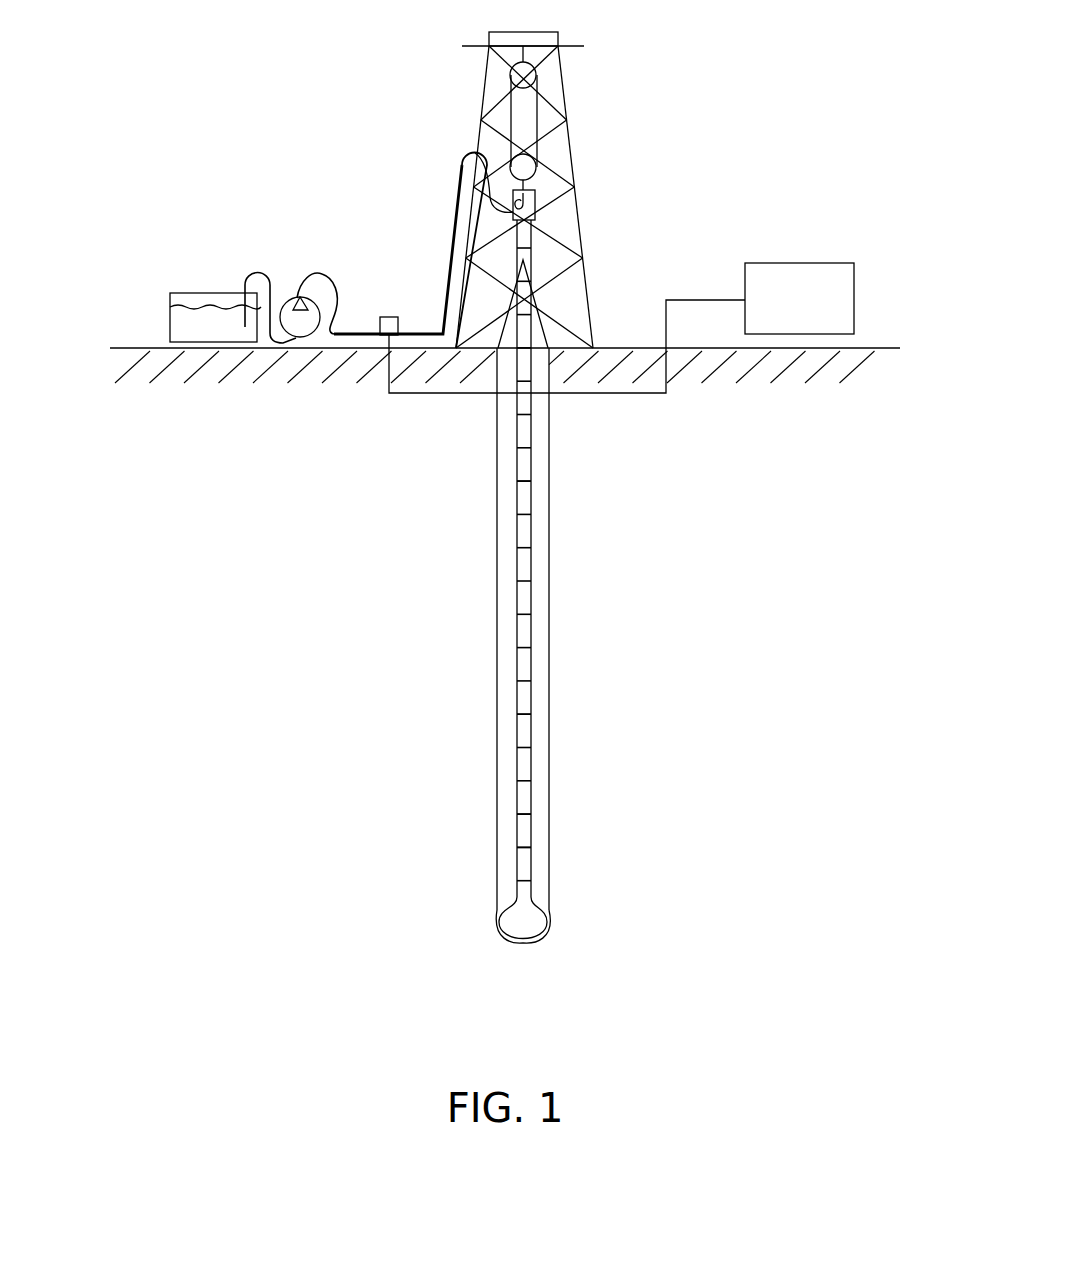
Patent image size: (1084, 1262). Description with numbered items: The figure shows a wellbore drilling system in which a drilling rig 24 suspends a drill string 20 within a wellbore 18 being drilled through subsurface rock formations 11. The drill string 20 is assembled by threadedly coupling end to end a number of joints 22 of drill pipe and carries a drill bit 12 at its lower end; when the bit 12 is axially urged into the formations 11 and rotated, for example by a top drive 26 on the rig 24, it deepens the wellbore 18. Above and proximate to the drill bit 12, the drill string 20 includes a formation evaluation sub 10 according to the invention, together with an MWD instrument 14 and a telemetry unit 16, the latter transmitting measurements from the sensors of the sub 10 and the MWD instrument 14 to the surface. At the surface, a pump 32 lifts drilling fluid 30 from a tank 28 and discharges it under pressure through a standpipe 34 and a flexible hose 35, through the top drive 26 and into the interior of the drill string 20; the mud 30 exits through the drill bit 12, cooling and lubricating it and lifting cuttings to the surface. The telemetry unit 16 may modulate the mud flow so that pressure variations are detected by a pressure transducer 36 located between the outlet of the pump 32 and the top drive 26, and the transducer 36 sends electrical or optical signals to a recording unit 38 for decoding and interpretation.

The formation evaluation sub 10 is at (525, 870).
The subsurface rock formations 11 is at (707, 667).
The drill bit 12 is at (530, 925).
The MWD instrument 14 is at (525, 838).
The telemetry unit 16 is at (525, 800).
The wellbore 18 is at (540, 640).
The drill string 20 is at (492, 372).
The joints 22 is at (523, 500).
The drilling rig 24 is at (568, 100).
The top drive 26 is at (536, 212).
The tank 28 is at (172, 292).
The drilling fluid 30 is at (227, 337).
The pump 32 is at (297, 296).
The standpipe 34 is at (454, 218).
The hose 35 is at (470, 152).
The pressure transducer 36 is at (386, 317).
The recording unit 38 is at (838, 263).